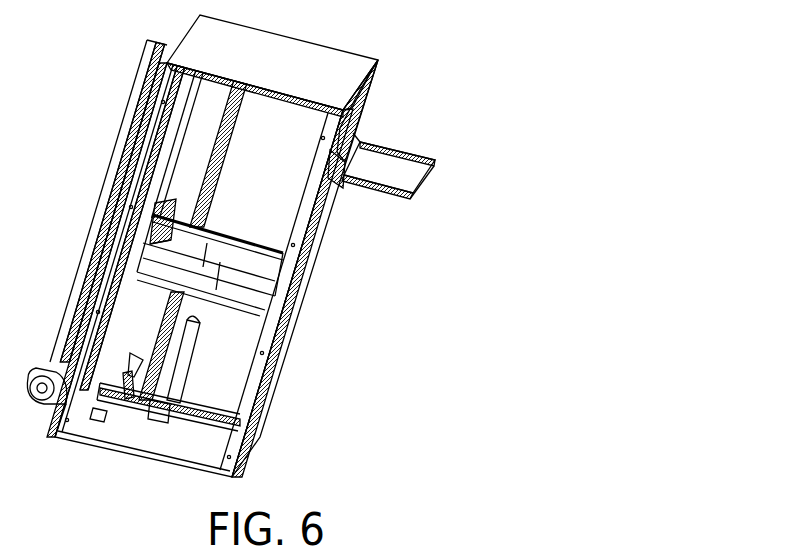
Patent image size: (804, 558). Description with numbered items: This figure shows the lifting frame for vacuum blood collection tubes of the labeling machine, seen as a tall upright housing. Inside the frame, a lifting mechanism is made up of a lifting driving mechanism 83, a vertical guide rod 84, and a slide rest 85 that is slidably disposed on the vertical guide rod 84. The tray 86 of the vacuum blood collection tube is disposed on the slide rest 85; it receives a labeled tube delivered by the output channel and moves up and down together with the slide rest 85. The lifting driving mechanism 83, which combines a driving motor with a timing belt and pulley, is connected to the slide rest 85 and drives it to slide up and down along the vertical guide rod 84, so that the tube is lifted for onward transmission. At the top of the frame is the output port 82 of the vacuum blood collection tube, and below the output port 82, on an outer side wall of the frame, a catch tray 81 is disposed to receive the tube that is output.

The catch tray of the vacuum blood collection tube 81 is at (392, 163).
The output port of the vacuum blood collection tube 82 is at (363, 114).
The lifting driving mechanism 83 is at (92, 226).
The vertical guide rod 84 is at (178, 141).
The slide rest 85 is at (163, 205).
The tray of the vacuum blood collection tube 86 is at (222, 233).